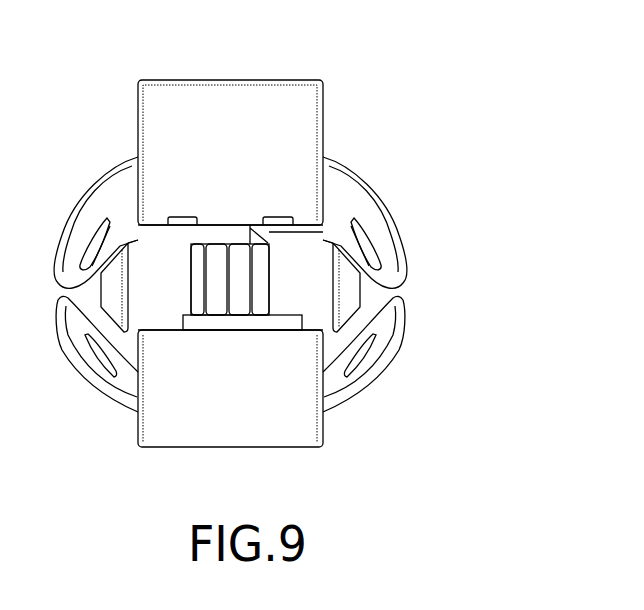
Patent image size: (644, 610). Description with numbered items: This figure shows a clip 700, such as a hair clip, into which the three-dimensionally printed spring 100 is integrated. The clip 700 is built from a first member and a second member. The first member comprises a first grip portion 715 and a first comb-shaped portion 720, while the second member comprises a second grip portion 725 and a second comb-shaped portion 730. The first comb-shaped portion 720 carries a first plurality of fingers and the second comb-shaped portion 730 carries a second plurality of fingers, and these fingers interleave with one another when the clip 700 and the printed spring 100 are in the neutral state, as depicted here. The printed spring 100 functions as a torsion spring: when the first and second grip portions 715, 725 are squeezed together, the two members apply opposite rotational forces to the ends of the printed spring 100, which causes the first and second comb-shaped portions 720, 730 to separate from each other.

The clip 700 is at (427, 175).
The first grip portion 715 is at (283, 88).
The first comb-shaped portion 720 is at (350, 187).
The second grip portion 725 is at (312, 428).
The second comb-shaped portion 730 is at (400, 332).
The 3D-printed spring 100 is at (218, 258).